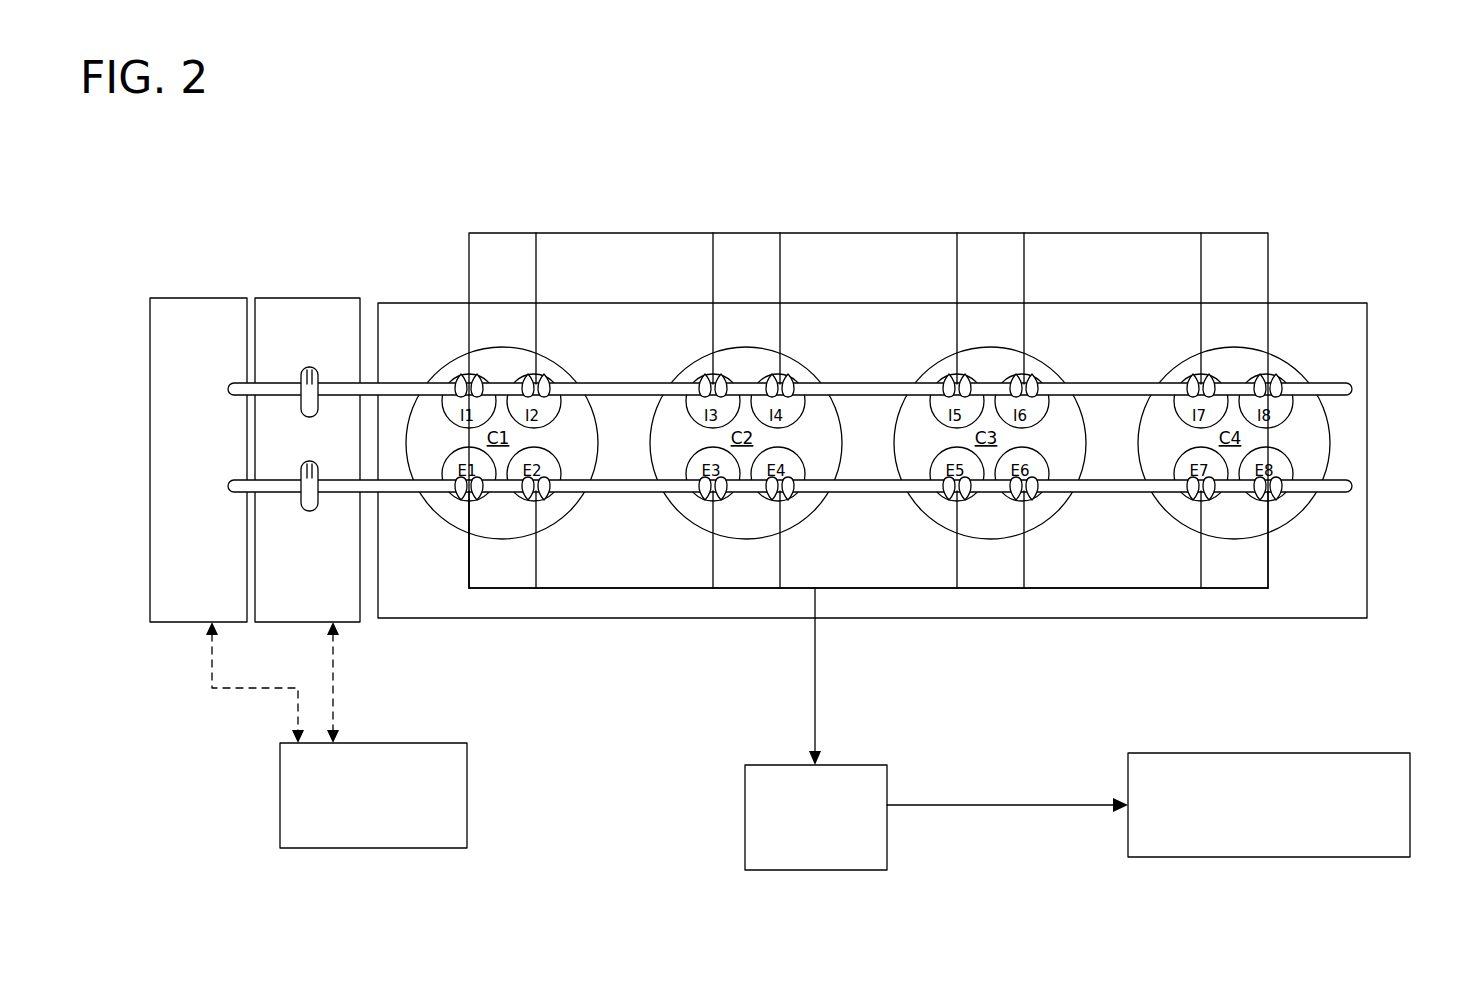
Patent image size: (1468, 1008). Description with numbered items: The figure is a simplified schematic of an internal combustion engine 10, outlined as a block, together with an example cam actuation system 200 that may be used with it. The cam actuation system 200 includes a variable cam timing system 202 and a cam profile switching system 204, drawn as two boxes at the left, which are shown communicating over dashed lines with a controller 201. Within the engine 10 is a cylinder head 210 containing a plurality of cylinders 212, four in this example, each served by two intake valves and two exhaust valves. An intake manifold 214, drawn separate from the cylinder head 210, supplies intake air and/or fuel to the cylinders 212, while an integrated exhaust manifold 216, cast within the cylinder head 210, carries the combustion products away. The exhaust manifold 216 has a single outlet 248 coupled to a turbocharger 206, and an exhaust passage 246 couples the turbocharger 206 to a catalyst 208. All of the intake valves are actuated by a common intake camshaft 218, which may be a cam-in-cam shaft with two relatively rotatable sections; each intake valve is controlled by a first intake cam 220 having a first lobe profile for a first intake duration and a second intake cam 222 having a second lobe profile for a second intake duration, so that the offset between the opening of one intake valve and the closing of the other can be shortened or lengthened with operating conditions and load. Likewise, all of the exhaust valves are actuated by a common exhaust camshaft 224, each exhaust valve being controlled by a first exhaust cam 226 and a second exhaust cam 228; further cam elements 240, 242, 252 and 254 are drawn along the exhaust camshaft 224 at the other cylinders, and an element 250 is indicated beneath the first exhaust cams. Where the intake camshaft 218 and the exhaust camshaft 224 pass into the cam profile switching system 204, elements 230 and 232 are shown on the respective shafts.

The engine 10 is at (442, 293).
The cam actuation system 200 is at (1402, 404).
The controller 201 is at (336, 735).
The variable cam timing (VCT) system 202 is at (232, 298).
The cam profile switching (CPS) system 204 is at (337, 298).
The turbocharger 206 is at (816, 817).
The catalyst 208 is at (1269, 805).
The cylinder head 210 is at (1297, 303).
The cylinders 212 is at (1287, 377).
The intake manifold 214 is at (1082, 233).
The integrated exhaust manifold 216 is at (1091, 588).
The intake camshaft 218 is at (363, 383).
The first intake cams 220 is at (459, 374).
The second intake cams 222 is at (478, 376).
The exhaust camshaft 224 is at (363, 480).
The first exhaust cams 226 is at (461, 500).
The second exhaust cams 228 is at (478, 500).
The intake camshaft sprocket 230 is at (306, 370).
The exhaust camshaft sprocket 232 is at (306, 464).
The exhaust cam lobe 240 is at (790, 500).
The exhaust cam lobe 242 is at (947, 500).
The exhaust passage 246 is at (1018, 805).
The outlet 248 is at (817, 710).
The valve actuator rod 250 is at (465, 500).
The exhaust cam lobe 252 is at (546, 500).
The exhaust cam lobe 254 is at (707, 500).